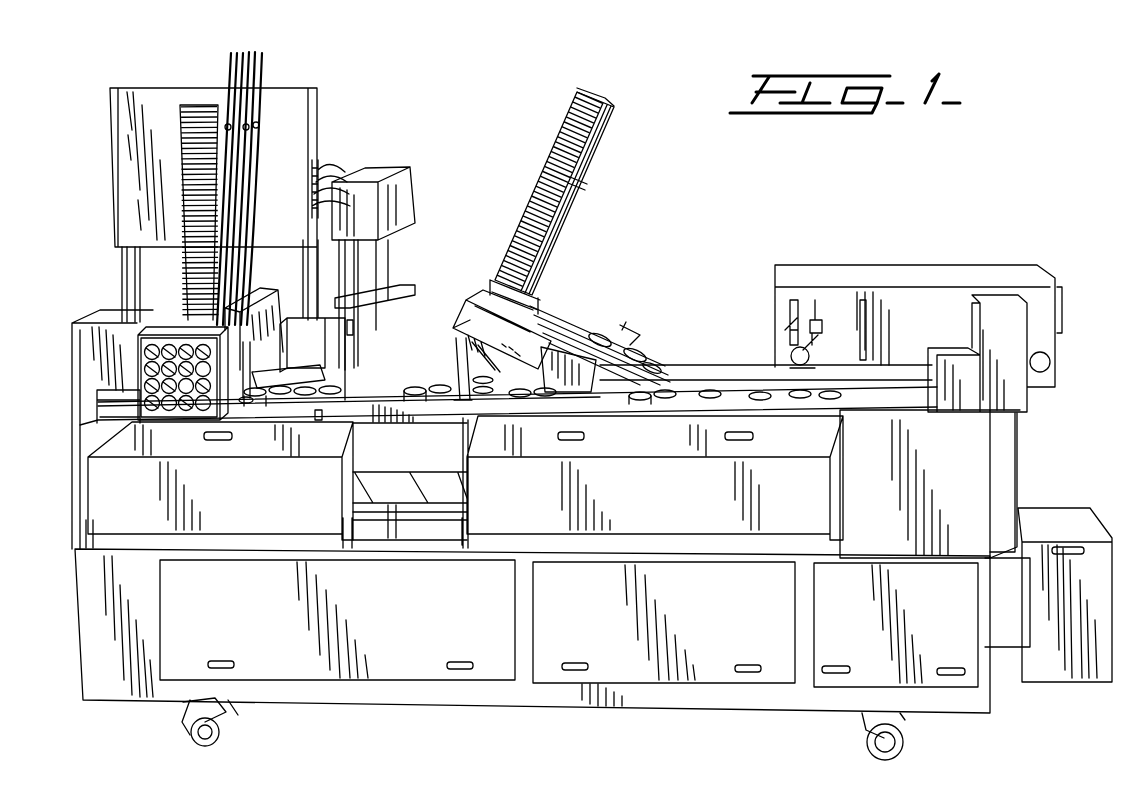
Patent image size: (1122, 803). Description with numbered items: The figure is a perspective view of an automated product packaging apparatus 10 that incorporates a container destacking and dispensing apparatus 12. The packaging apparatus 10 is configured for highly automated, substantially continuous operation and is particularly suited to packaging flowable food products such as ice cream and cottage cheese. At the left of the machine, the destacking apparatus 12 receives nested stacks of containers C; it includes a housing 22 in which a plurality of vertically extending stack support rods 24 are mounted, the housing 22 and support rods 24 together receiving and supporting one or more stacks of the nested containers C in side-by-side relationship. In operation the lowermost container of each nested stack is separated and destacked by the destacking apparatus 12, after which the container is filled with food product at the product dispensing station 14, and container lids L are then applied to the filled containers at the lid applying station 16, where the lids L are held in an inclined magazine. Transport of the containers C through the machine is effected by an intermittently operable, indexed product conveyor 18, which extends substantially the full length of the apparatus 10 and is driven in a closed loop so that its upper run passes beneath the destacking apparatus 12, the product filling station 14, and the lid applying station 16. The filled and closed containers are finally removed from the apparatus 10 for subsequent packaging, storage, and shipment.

The automated product packaging apparatus 10 is at (868, 228).
The container destacking and dispensing apparatus 12 is at (296, 139).
The product dispensing station 14 is at (423, 188).
The lid applying station 16 is at (601, 199).
The product conveyor 18 is at (420, 352).
The housing 22 is at (288, 265).
The stack support rods 24 is at (263, 63).
The containers C is at (178, 122).
The container lids L is at (578, 93).